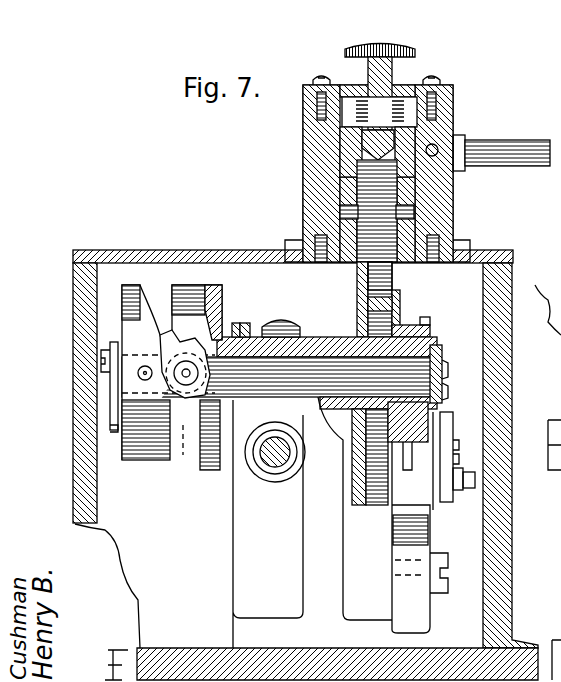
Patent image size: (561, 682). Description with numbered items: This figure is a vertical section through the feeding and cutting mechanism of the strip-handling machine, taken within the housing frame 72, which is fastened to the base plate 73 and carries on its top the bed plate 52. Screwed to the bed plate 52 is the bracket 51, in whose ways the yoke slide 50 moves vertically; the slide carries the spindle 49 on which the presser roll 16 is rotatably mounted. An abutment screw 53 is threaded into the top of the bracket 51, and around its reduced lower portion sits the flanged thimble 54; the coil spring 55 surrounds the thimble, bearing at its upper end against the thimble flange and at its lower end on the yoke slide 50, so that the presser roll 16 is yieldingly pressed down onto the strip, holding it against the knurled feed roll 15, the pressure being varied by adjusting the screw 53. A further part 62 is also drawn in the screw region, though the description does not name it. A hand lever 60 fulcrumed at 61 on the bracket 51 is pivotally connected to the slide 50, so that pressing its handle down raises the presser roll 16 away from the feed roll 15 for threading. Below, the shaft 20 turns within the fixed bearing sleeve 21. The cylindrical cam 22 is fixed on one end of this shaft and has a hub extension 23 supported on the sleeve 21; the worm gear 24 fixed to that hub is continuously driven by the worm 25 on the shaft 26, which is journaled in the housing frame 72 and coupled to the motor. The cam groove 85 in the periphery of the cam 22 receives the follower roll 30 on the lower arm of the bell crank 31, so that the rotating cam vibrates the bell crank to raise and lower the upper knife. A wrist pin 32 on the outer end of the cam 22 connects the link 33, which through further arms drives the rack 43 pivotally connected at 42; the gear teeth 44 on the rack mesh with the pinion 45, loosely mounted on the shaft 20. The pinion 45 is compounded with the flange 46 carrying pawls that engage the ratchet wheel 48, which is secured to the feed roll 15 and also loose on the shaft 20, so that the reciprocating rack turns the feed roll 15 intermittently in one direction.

The feed roll 15 is at (357, 283).
The presser roll 16 is at (395, 198).
The shaft 20 is at (438, 361).
The bearing sleeve 21 is at (336, 430).
The cylindrical cam 22 is at (127, 285).
The hub extension 23 is at (252, 323).
The worm gear 24 is at (281, 323).
The worm 25 is at (280, 478).
The shaft 26 is at (262, 466).
The follower roll 30 is at (195, 442).
The bell crank 31 is at (113, 375).
The wrist pin 32 is at (108, 350).
The link 33 is at (113, 403).
The pivotal connection 42 is at (457, 433).
The rack 43 is at (436, 409).
The gear teeth 44 is at (552, 391).
The pinion 45 is at (411, 338).
The flange 46 is at (400, 292).
The ratchet wheel 48 is at (401, 315).
The spindle 49 is at (400, 222).
The yoke slide 50 is at (340, 176).
The bracket 51 is at (453, 103).
The bed plate 52 is at (168, 252).
The abutment screw 53 is at (392, 75).
The flanged thimble 54 is at (350, 105).
The coil spring 55 is at (355, 126).
The hand lever 60 is at (478, 153).
The fulcrum 61 is at (440, 147).
The wedge 62 is at (348, 155).
The housing frame 72 is at (560, 528).
The base plate 73 is at (160, 648).
The cam groove 85 is at (158, 330).